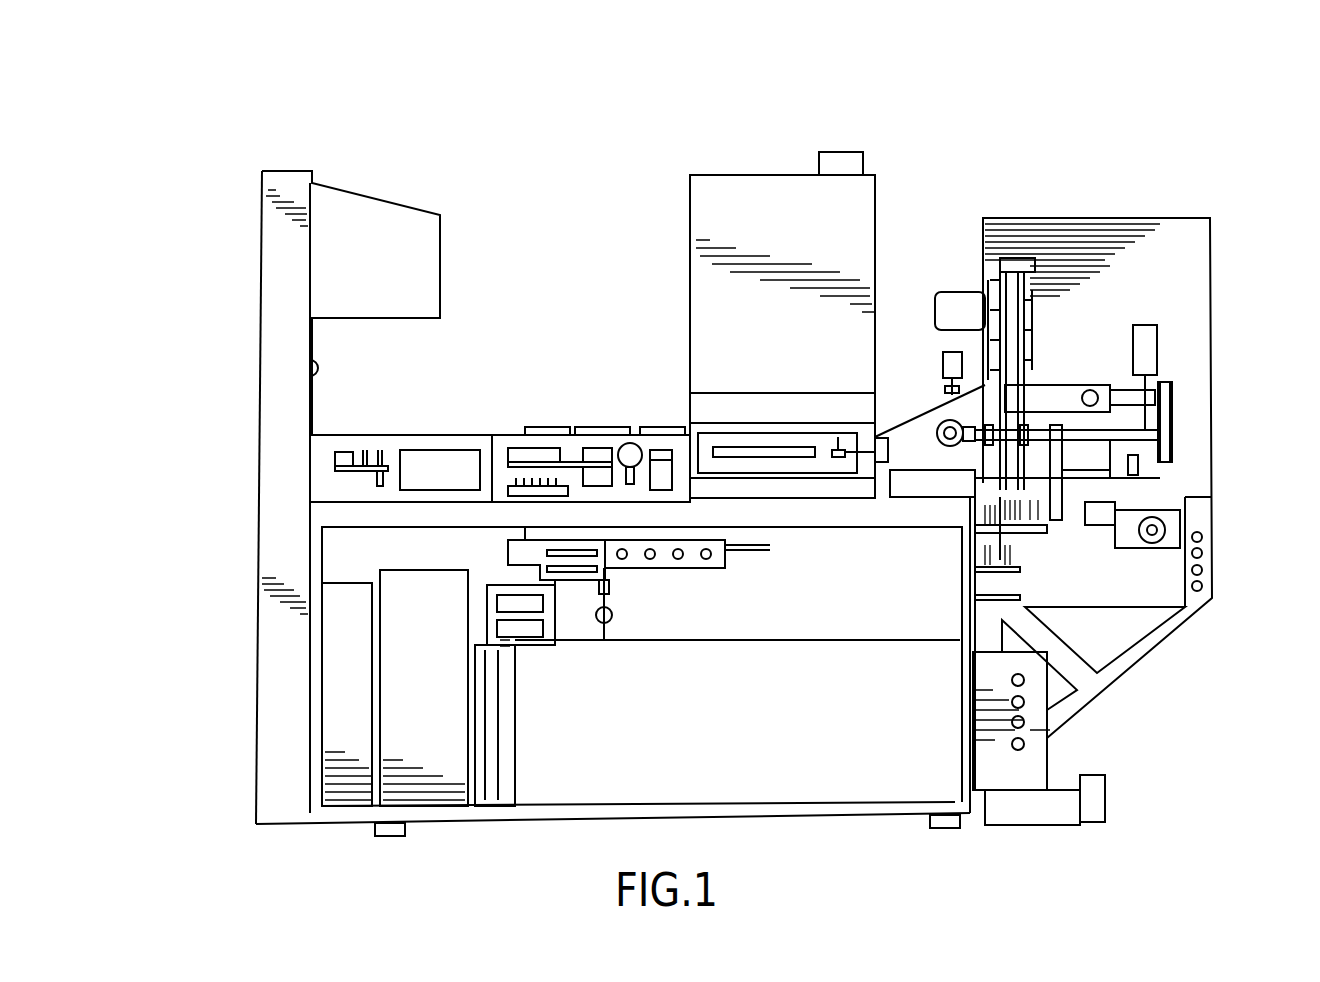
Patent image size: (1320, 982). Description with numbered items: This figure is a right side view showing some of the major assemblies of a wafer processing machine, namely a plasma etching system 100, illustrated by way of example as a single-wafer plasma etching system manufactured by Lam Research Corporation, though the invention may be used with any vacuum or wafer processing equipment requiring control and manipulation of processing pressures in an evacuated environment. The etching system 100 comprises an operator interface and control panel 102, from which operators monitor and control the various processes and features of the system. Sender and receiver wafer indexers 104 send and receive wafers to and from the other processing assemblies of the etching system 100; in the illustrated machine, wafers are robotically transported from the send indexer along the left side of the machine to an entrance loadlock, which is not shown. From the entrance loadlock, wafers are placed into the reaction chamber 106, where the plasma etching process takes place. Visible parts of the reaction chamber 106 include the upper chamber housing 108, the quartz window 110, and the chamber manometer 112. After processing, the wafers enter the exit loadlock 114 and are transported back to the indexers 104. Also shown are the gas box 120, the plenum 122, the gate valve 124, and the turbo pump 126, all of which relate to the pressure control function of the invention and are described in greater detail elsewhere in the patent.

The plasma etching system 100 is at (270, 135).
The operator interface and control panel 102 is at (262, 300).
The sender and receiver wafer indexers 104 is at (262, 482).
The reaction chamber 106 is at (888, 272).
The upper chamber housing 108 is at (724, 222).
The quartz window 110 is at (734, 447).
The chamber manometer 112 is at (838, 437).
The exit loadlock 114 is at (513, 418).
The gas box 120 is at (731, 733).
The plenum 122 is at (883, 440).
The gate valve 124 is at (1027, 307).
The turbo pump 126 is at (1175, 438).